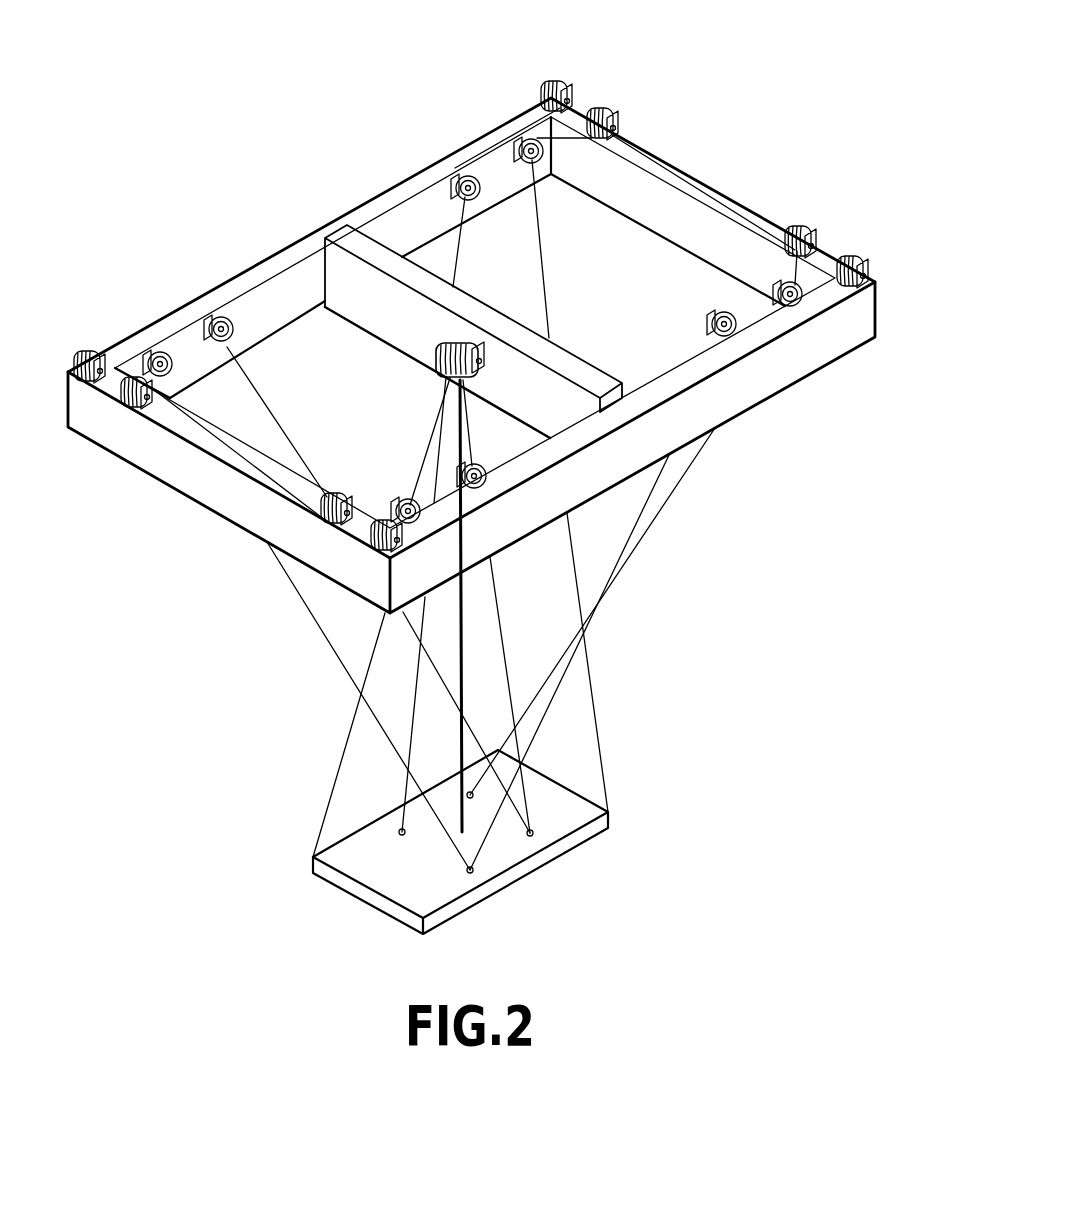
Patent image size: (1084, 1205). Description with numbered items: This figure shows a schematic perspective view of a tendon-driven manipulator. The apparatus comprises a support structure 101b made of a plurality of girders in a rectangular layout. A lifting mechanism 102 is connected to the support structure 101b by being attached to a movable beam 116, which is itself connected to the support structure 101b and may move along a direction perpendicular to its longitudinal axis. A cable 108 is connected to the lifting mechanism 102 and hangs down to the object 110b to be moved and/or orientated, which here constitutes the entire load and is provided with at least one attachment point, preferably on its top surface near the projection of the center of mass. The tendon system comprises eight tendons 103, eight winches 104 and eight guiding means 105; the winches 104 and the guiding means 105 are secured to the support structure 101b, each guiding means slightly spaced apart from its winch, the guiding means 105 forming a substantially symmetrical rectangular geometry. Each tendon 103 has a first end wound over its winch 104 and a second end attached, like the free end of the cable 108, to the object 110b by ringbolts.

The support structure 101b is at (258, 273).
The lifting mechanism 102 is at (440, 356).
The tendons 103 is at (353, 722).
The winches 104 is at (614, 116).
The guiding means 105 is at (520, 145).
The cable 108 is at (463, 668).
The object 110b is at (505, 848).
The movable beam 116 is at (448, 298).